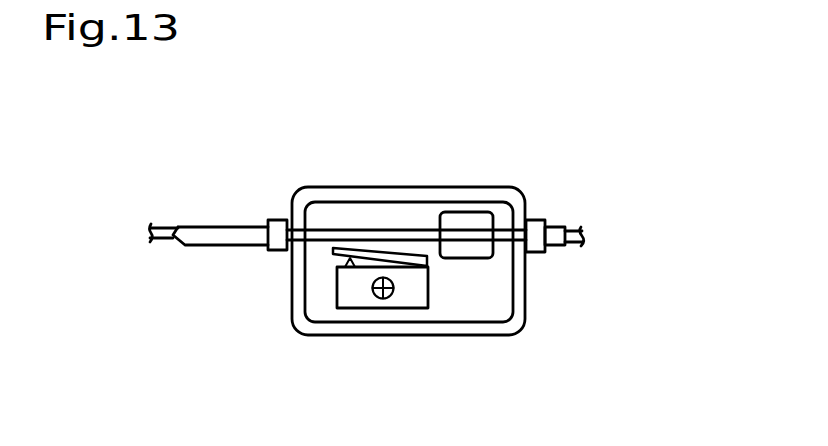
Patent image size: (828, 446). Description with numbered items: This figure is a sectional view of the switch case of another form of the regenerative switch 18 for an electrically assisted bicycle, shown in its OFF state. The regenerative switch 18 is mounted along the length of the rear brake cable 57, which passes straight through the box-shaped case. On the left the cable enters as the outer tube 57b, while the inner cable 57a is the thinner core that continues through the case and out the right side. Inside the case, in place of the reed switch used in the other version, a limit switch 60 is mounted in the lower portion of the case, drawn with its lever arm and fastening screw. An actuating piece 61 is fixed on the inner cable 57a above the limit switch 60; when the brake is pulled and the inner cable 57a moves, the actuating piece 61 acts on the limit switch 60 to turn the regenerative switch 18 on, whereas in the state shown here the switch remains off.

The regenerative switch 18 is at (425, 190).
The rear brake cable 57 is at (560, 227).
The inner cable 57a is at (167, 238).
The outer tube 57b is at (217, 228).
The limit switch 60 is at (416, 300).
The actuating piece 61 is at (487, 218).